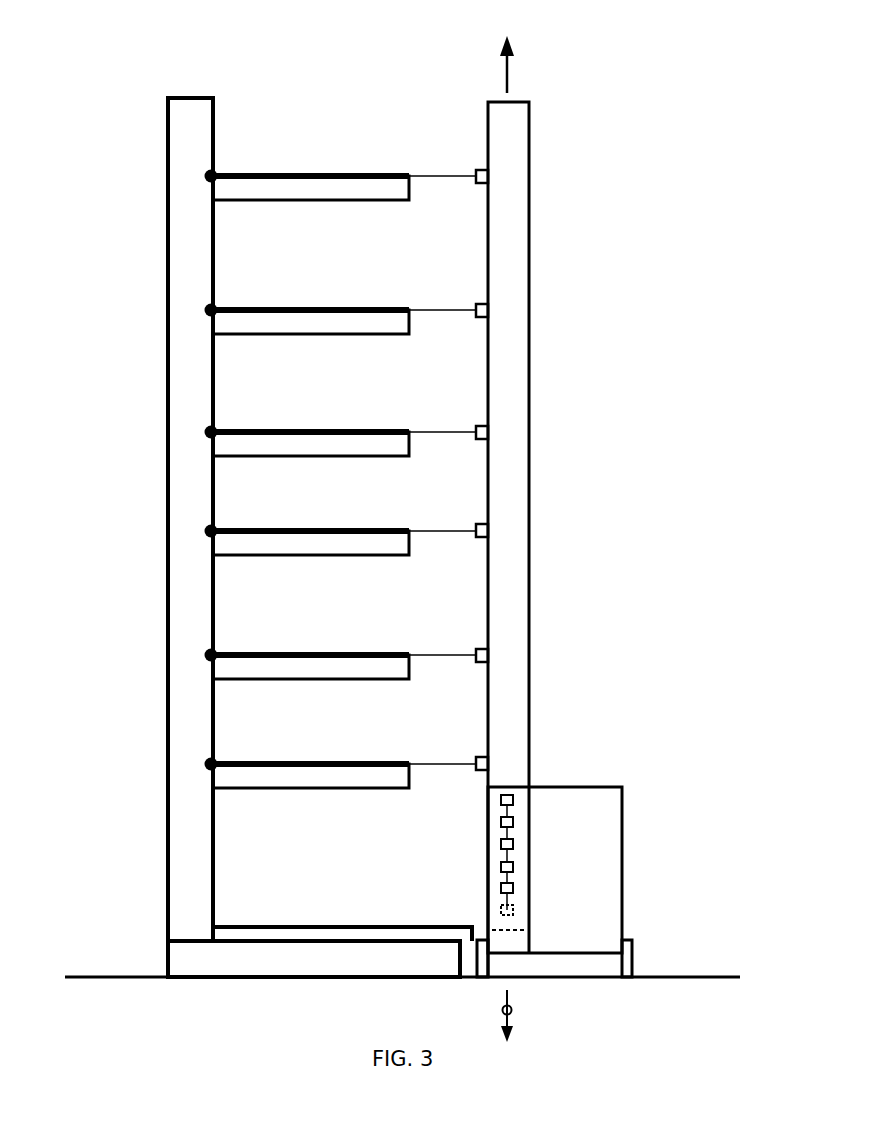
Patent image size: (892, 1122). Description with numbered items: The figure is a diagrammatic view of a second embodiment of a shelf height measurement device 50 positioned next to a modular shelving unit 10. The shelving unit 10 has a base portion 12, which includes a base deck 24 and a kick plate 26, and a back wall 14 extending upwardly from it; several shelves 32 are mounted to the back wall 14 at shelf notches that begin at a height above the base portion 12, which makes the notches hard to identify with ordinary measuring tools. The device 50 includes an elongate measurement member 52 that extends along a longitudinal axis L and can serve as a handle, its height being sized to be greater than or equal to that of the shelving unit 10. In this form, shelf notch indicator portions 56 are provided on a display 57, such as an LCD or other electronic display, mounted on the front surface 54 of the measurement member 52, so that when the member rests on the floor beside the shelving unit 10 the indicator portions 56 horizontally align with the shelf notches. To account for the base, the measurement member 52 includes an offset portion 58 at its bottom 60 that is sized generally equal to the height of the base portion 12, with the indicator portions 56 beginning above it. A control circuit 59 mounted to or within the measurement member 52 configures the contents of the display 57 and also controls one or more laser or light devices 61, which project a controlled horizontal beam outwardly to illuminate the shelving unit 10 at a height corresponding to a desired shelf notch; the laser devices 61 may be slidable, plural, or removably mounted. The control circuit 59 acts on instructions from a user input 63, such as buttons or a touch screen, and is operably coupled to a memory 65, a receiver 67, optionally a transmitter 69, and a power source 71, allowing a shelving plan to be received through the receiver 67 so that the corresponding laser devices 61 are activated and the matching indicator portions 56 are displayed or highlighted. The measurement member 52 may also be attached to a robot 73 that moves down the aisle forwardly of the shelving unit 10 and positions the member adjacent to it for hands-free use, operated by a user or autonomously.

The modular shelving unit 10 is at (200, 100).
The base portion 12 is at (203, 965).
The back wall 14 is at (185, 583).
The base deck 24 is at (277, 965).
The kick plate 26 is at (460, 963).
The shelves 32 is at (340, 190).
The shelf height measurement device 50 is at (529, 102).
The elongate measurement member 52 is at (530, 360).
The front surface 54 is at (517, 248).
The shelf notch indicator portions 56 is at (500, 173).
The display 57 is at (517, 500).
The offset portion 58 is at (715, 932).
The control circuit 59 is at (515, 800).
The bottom 60 is at (527, 965).
The laser or light devices 61 is at (481, 168).
The user input 63 is at (501, 822).
The memory 65 is at (501, 844).
The receiver 67 is at (501, 867).
The transmitter 69 is at (501, 888).
The power source 71 is at (513, 910).
The robot 73 is at (610, 786).
The longitudinal axis L is at (512, 1015).